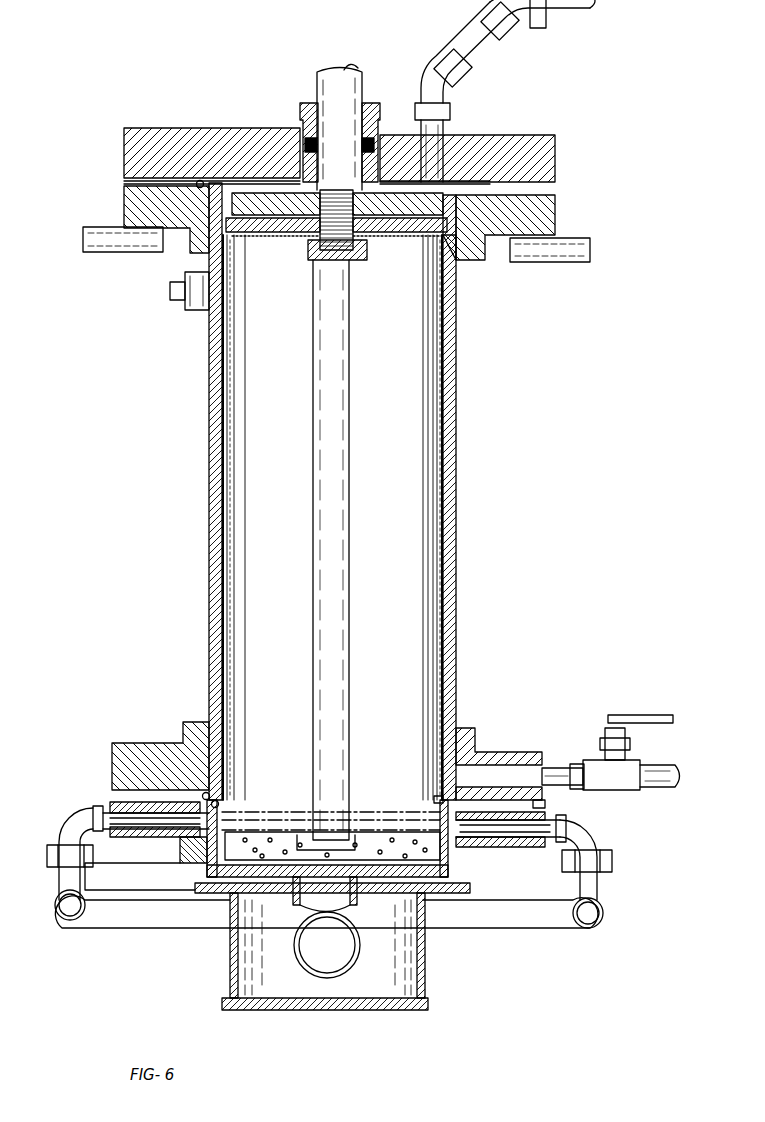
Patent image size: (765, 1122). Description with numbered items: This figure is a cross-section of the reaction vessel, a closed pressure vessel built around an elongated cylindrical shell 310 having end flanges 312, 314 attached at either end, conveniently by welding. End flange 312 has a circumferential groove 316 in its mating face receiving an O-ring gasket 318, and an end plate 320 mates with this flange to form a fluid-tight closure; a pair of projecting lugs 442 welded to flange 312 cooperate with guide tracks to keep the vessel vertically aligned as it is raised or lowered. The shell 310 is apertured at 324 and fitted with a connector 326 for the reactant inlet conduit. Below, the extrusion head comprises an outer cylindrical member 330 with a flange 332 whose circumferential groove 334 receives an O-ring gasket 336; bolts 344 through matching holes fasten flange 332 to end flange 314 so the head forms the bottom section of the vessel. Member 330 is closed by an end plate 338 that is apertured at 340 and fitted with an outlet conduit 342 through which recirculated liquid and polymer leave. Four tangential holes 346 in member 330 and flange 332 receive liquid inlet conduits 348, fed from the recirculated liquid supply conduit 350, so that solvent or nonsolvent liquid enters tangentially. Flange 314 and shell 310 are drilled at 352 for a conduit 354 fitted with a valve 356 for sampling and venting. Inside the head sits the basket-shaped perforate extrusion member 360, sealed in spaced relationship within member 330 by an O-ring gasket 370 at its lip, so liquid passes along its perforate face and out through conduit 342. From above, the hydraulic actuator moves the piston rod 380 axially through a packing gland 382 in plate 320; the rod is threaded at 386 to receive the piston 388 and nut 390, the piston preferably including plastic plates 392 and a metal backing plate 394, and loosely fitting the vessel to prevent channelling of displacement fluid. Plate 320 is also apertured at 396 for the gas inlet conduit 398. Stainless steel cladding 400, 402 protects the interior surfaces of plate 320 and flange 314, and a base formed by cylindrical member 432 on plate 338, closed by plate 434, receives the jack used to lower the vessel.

The cylindrical shell 310 is at (457, 468).
The end flange 312 is at (556, 212).
The end flange 314 is at (480, 745).
The circumferential groove 316 is at (200, 190).
The O-ring gasket 318 is at (200, 182).
The end plate 320 is at (124, 150).
The aperture 324 is at (236, 306).
The connector 326 is at (186, 302).
The outer cylindrical member 330 is at (466, 888).
The flange 332 is at (505, 850).
The circumferential groove 334 is at (213, 792).
The O-ring gasket 336 is at (185, 745).
The end plate 338 is at (222, 898).
The aperture 340 is at (300, 893).
The outlet conduit 342 is at (327, 979).
The bolts 344 is at (545, 806).
The tangential holes 346 is at (104, 812).
The liquid inlet conduits 348 is at (107, 832).
The recirculated liquid supply conduit 350 is at (562, 929).
The drilled hole 352 is at (548, 768).
The conduit 354 is at (586, 764).
The valve 356 is at (638, 792).
The perforate extrusion member 360 is at (440, 830).
The O-ring gasket 370 is at (220, 804).
The piston rod 380 is at (365, 76).
The packing gland 382 is at (302, 125).
The threaded portion 386 is at (312, 248).
The piston 388 is at (265, 216).
The nut 390 is at (345, 262).
The plastic plates 392 is at (453, 262).
The metal backing plate 394 is at (368, 233).
The aperture 396 is at (450, 128).
The gas inlet conduit 398 is at (488, 58).
The stainless steel cladding 400 is at (185, 182).
The stainless steel cladding 402 is at (440, 798).
The cylindrical member 432 is at (426, 970).
The plate 434 is at (396, 1011).
The projecting lugs 442 is at (83, 240).